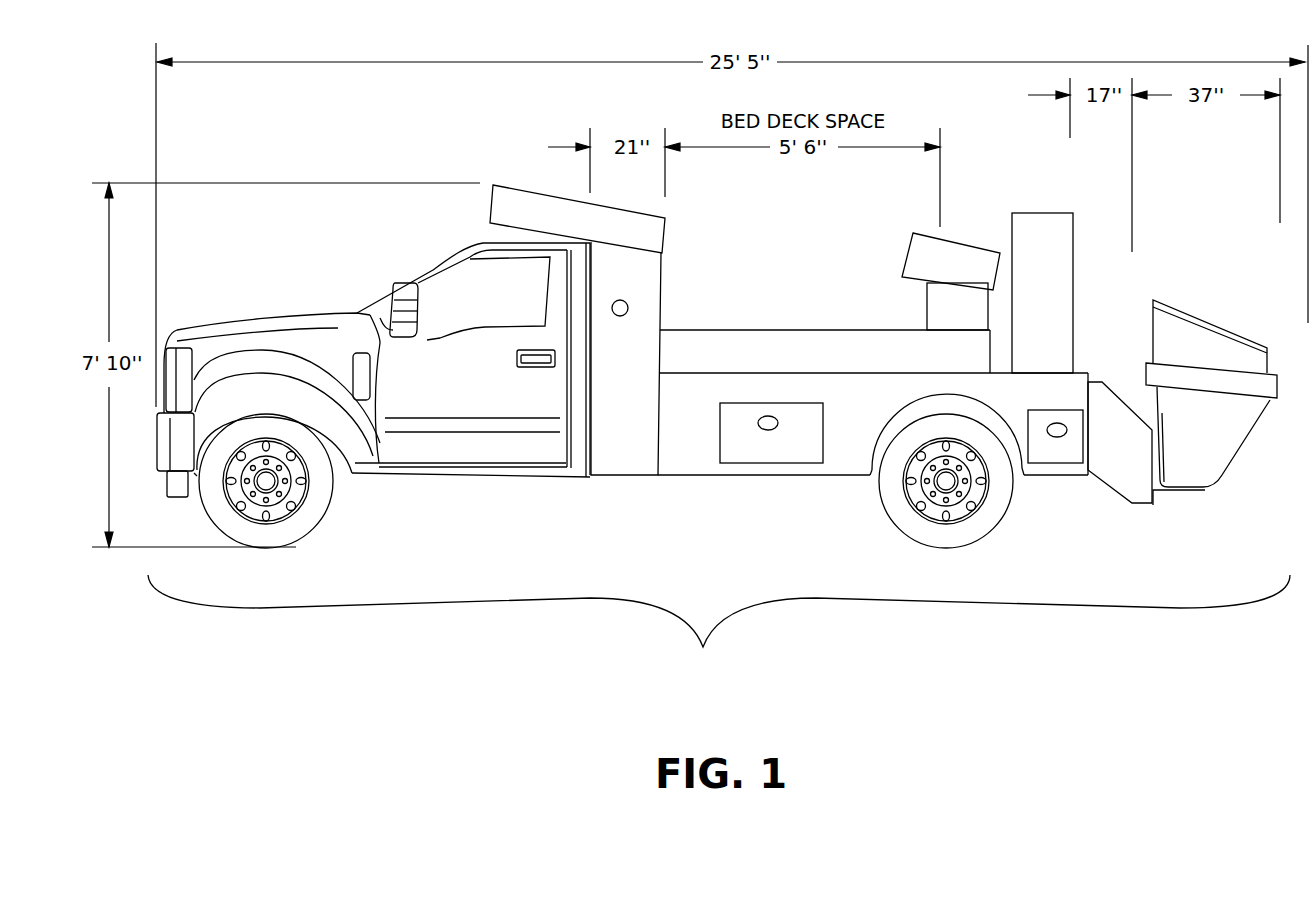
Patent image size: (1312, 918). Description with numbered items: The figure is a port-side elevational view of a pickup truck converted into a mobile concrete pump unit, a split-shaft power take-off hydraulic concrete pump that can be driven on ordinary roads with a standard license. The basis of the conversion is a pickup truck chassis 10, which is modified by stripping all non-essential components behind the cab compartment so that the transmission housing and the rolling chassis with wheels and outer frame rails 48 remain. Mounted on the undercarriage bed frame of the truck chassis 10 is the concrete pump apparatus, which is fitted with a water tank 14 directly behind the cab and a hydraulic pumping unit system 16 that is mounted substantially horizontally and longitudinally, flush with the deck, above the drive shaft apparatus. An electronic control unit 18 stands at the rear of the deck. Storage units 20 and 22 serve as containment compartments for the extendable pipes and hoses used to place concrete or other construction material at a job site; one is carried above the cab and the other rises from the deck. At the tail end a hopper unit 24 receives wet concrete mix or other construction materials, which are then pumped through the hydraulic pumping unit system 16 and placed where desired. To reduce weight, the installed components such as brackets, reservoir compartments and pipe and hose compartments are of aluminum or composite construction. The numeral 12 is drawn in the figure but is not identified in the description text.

The pickup truck chassis 10 is at (719, 424).
The truck cab and chassis 12 is at (613, 462).
The water tank 14 is at (663, 278).
The hydraulic pumping unit system 16 is at (782, 347).
The electronic control unit 18 is at (1057, 242).
The storage unit 20 is at (663, 218).
The storage unit 22 is at (940, 253).
The hopper unit 24 is at (1195, 313).
The rolling chassis with wheels and outer frame rails 48 is at (783, 467).